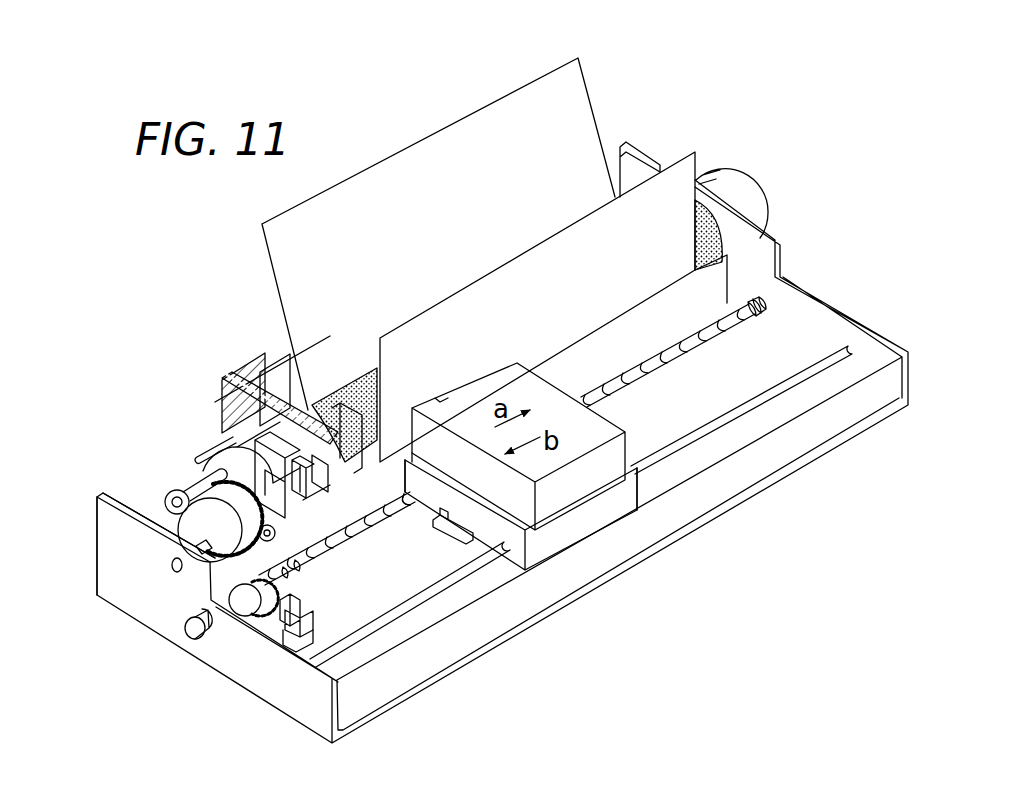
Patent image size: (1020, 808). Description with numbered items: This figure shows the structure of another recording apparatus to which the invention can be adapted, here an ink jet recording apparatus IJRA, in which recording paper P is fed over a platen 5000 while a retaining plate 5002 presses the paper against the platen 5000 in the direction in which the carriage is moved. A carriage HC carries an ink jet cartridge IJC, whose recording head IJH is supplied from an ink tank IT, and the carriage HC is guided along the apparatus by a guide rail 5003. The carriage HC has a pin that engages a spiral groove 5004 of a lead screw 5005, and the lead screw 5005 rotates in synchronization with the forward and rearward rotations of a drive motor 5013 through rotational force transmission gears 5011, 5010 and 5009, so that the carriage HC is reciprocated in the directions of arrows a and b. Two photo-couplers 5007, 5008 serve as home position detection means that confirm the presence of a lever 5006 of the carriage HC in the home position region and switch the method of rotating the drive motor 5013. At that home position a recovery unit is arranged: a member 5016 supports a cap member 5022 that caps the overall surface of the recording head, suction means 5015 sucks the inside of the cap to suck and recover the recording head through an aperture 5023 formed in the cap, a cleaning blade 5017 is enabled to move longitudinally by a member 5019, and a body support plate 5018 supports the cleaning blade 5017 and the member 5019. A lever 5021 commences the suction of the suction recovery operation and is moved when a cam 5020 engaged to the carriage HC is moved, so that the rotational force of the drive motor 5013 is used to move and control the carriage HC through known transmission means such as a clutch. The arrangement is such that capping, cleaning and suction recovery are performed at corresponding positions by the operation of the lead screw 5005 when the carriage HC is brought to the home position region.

The ink jet recording apparatus IJRA is at (662, 146).
The recording paper P is at (582, 96).
The platen 5000 is at (720, 240).
The retaining plate 5002 is at (635, 310).
The ink jet head IJH is at (453, 303).
The ink tank IT is at (552, 388).
The ink jet cartridge IJC is at (612, 414).
The carriage HC is at (632, 494).
The guide rail 5003 is at (480, 560).
The spiral groove 5004 is at (407, 522).
The lead screw 5005 is at (392, 560).
The lever 5006 is at (455, 530).
The photo-coupler 5007 is at (312, 606).
The photo-coupler 5008 is at (288, 650).
The rotational force transmission gear 5009 is at (235, 616).
The driving force transmission gear 5010 is at (212, 566).
The rotational force transmission gear 5011 is at (185, 541).
The drive motor 5013 is at (222, 440).
The suction means 5015 is at (250, 382).
The member for supporting cap member 5016 is at (315, 400).
The cleaning blade 5017 is at (337, 397).
The body support plate 5018 is at (228, 378).
The member 5019 is at (227, 397).
The cam 5020 is at (262, 600).
The lever 5021 is at (207, 472).
The cap member 5022 is at (322, 465).
The aperture 5023 is at (303, 500).